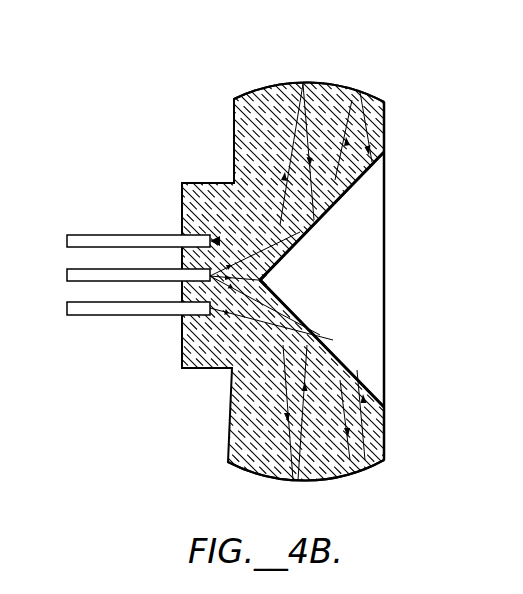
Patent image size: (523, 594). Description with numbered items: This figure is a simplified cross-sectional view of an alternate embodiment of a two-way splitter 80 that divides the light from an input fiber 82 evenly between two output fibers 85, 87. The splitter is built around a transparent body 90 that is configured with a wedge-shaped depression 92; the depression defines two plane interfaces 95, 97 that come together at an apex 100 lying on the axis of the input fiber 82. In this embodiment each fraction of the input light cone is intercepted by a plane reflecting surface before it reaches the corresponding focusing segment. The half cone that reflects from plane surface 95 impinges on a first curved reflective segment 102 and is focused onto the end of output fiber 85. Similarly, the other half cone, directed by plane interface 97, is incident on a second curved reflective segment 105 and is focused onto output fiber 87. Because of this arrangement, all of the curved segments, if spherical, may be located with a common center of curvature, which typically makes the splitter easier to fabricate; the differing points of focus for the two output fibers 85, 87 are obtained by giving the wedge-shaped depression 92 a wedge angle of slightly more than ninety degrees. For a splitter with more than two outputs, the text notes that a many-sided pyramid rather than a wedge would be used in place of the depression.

The two-way splitter 80 is at (368, 77).
The input fiber 82 is at (70, 270).
The output fiber 85 is at (70, 236).
The output fiber 87 is at (70, 303).
The transparent body 90 is at (390, 120).
The wedge-shaped depression 92 is at (352, 311).
The plane interface 95 is at (210, 241).
The plane interface 97 is at (350, 375).
The apex 100 is at (262, 280).
The first curved reflective segment 102 is at (328, 74).
The second curved reflective segment 105 is at (315, 481).